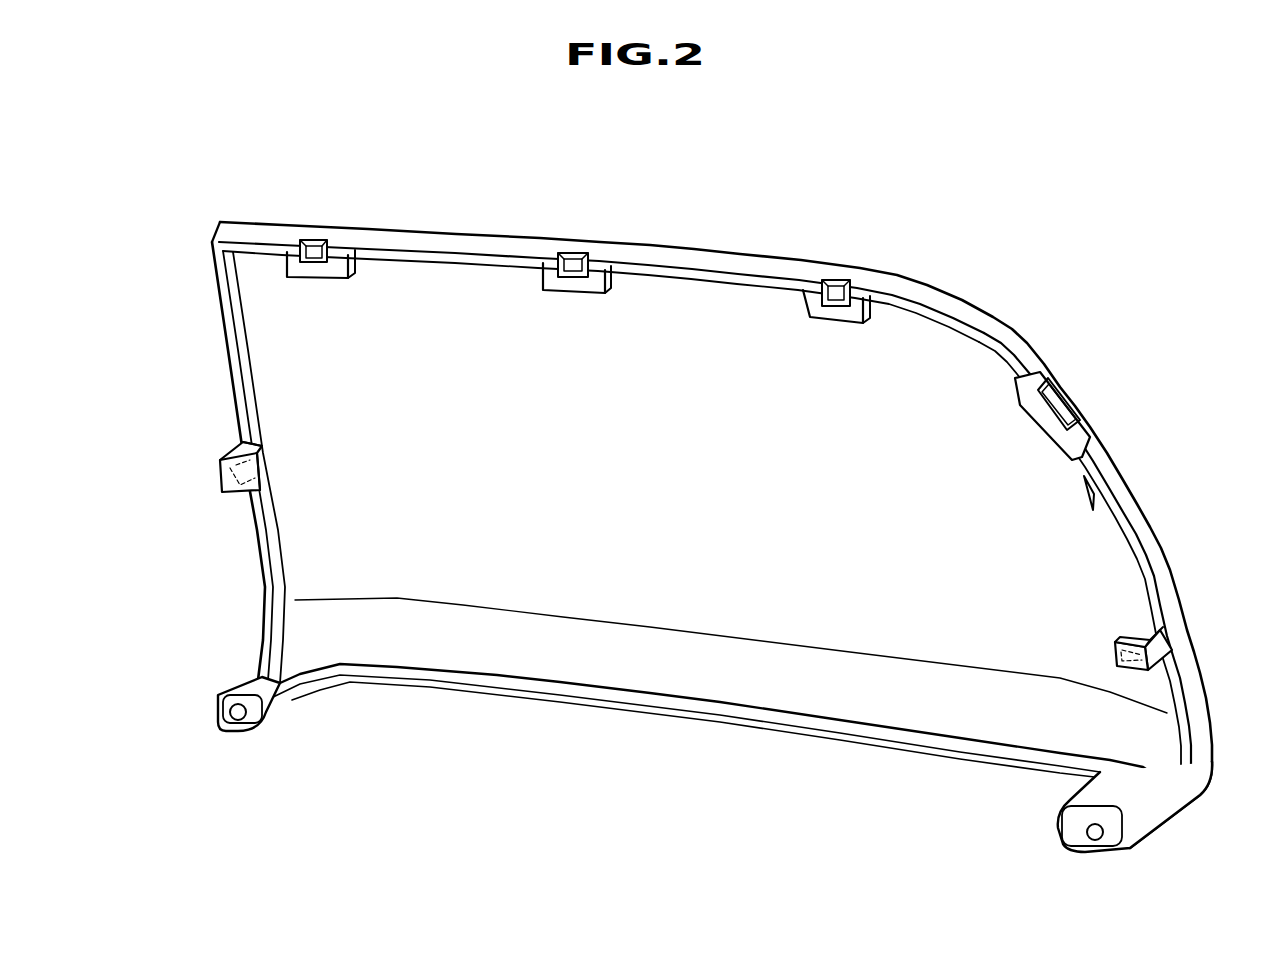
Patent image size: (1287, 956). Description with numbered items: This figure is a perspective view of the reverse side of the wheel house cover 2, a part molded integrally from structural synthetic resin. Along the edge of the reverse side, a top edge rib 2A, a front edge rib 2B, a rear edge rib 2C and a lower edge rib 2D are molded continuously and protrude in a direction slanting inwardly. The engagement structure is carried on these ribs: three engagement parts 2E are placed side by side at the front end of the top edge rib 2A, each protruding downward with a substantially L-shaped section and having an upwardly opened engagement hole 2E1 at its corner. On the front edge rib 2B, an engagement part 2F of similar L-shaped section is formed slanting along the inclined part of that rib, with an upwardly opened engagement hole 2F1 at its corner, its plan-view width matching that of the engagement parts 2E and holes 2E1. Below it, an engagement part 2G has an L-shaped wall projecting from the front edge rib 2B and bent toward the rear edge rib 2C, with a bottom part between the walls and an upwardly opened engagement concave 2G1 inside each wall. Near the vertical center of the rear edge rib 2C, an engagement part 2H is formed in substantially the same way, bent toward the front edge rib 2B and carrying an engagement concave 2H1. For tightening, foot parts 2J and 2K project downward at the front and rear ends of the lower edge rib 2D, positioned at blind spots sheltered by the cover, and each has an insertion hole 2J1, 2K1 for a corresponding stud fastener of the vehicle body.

The wheel house cover 2 is at (699, 504).
The top edge rib 2A is at (481, 262).
The front edge rib 2B is at (1118, 520).
The rear edge rib 2C is at (263, 540).
The lower edge rib 2D is at (625, 708).
The engagement part 2E is at (340, 262).
The engagement hole 2E1 is at (315, 248).
The engagement part 2F is at (1089, 399).
The engagement hole 2F1 is at (1047, 380).
The engagement part 2G is at (1192, 628).
The engagement concave 2G1 is at (1137, 637).
The engagement part 2H is at (195, 420).
The engagement concave 2H1 is at (243, 442).
The foot part 2J is at (1081, 831).
The insertion hole 2J1 is at (1086, 829).
The foot part 2K is at (231, 745).
The insertion hole 2K1 is at (230, 708).